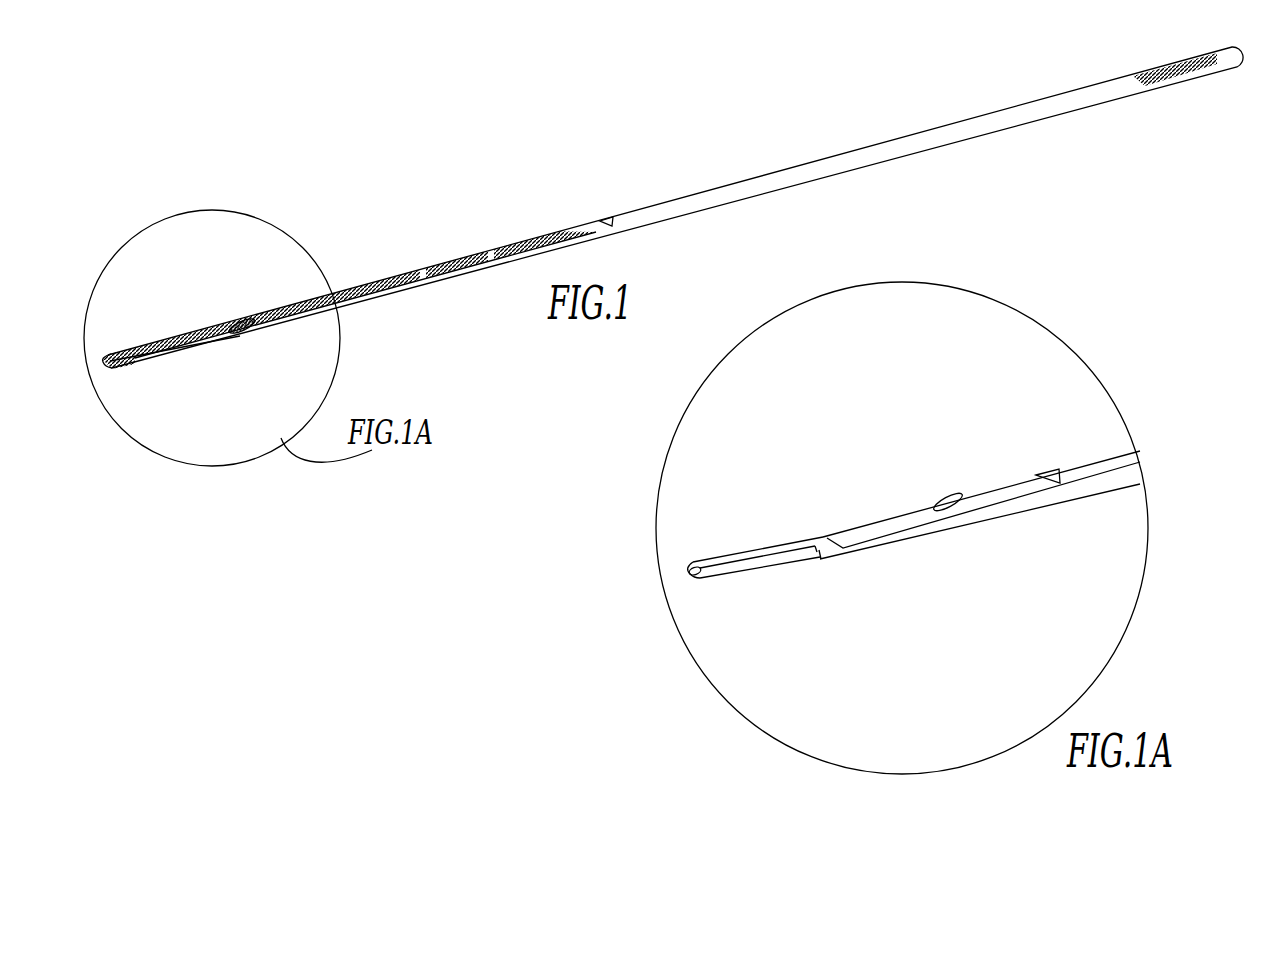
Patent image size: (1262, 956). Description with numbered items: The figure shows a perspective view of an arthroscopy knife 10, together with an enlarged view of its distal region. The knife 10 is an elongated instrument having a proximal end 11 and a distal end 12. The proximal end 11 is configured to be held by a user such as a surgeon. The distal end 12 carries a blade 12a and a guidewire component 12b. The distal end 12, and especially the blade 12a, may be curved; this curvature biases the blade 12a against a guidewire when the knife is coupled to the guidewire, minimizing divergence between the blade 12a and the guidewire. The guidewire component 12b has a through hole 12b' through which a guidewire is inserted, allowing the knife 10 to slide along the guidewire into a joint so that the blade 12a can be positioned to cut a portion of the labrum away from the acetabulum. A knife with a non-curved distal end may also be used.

In FIG. 1, the knife 10 is at (514, 216).
In FIG. 1, the proximal end 11 is at (856, 156).
In FIG. 1, the distal end 12 is at (205, 331).
In FIG. 1A, the distal end 12 is at (826, 538).
In FIG. 1, the blade 12a is at (113, 352).
In FIG. 1A, the blade 12a is at (733, 556).
In FIG. 1, the guidewire component 12b is at (264, 300).
In FIG. 1A, the guidewire component 12b is at (974, 472).
In FIG. 1A, the through hole 12b' is at (1058, 450).